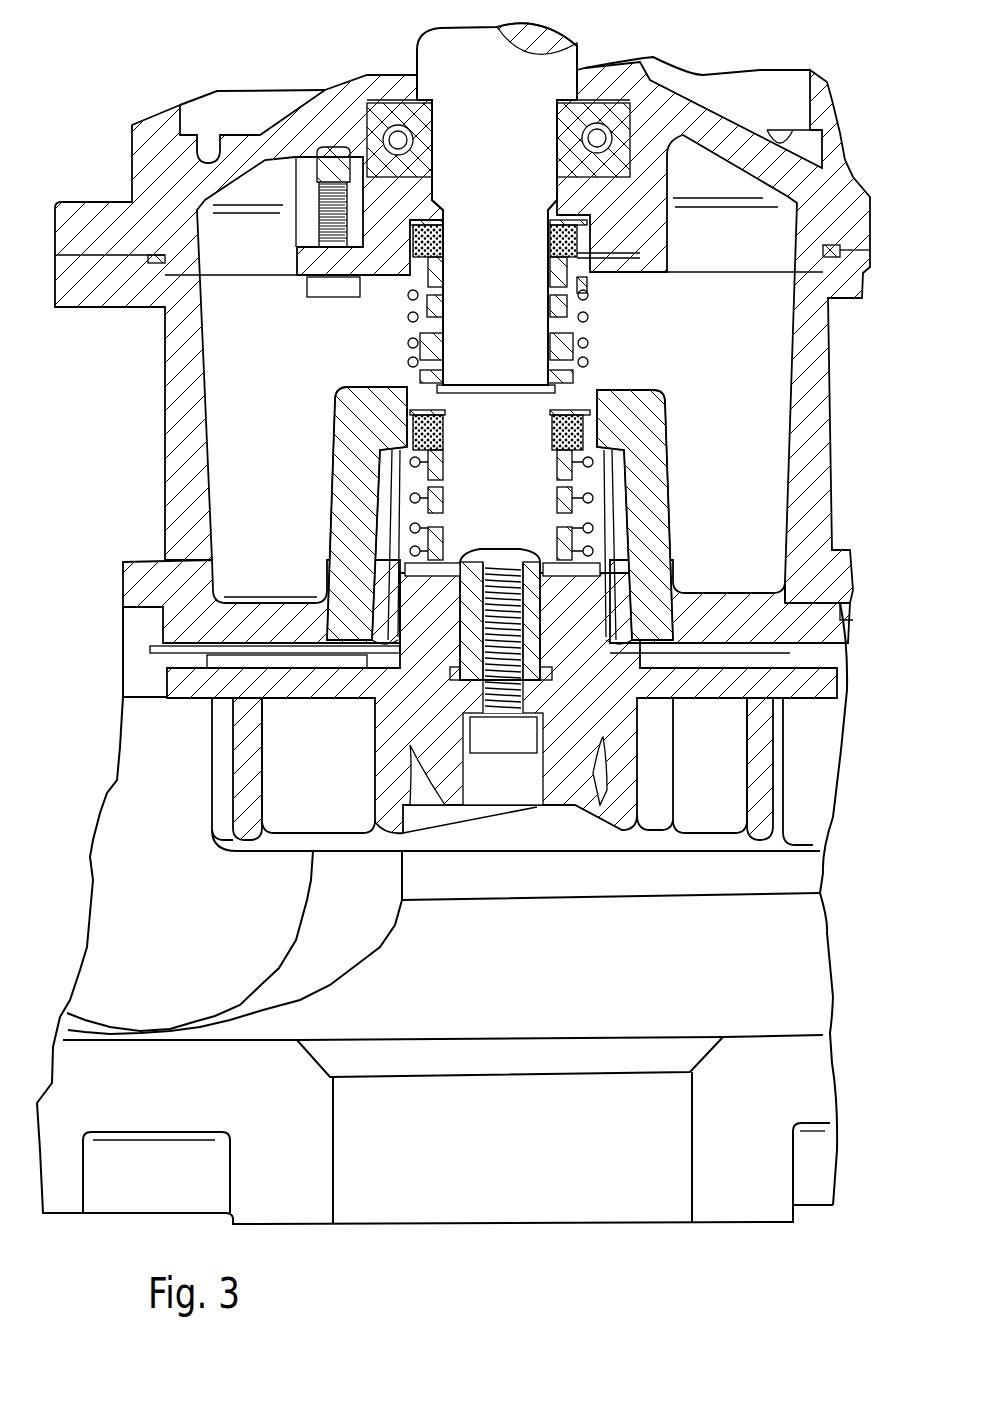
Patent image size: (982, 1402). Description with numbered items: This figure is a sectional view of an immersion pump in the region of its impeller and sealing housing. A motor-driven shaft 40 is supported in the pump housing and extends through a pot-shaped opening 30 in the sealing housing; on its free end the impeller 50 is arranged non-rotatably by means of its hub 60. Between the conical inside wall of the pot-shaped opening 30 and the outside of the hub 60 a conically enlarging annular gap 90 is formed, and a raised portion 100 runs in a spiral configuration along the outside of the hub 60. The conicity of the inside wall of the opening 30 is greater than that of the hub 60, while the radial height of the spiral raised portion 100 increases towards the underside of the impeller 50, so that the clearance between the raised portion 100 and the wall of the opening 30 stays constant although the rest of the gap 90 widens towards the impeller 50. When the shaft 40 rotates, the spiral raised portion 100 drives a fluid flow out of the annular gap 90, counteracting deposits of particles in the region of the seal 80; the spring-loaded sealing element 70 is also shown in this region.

The pot-shaped opening 30 is at (620, 525).
The shaft 40 is at (543, 72).
The impeller 50 is at (246, 795).
The hub 60 is at (580, 597).
The spring seal 70 is at (590, 495).
The seal 80 is at (616, 433).
The annular gap 90 is at (655, 627).
The raised portion 100 is at (397, 482).